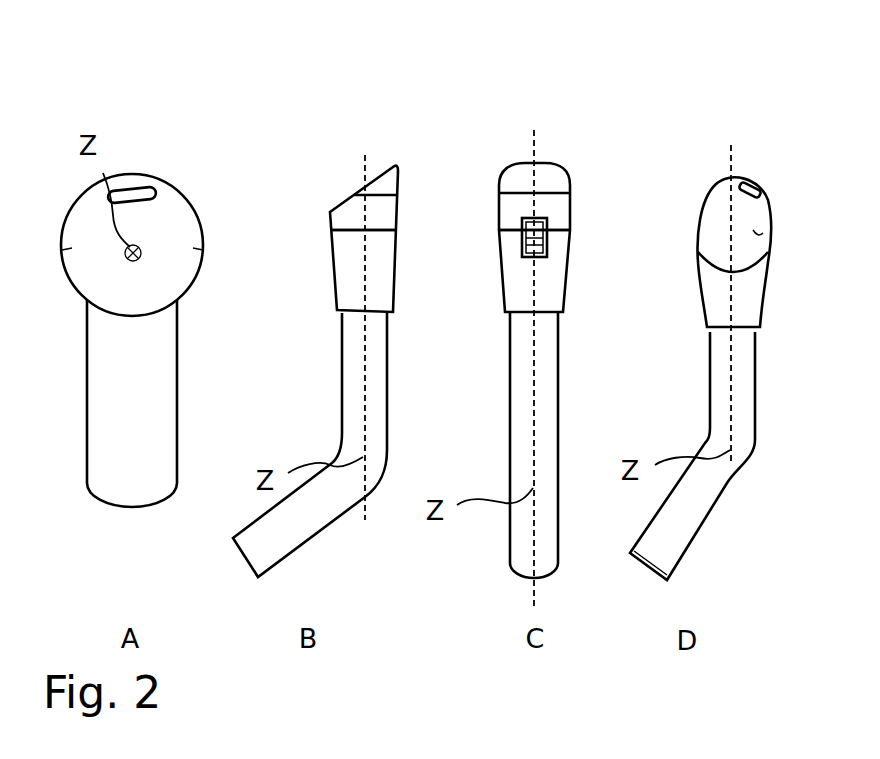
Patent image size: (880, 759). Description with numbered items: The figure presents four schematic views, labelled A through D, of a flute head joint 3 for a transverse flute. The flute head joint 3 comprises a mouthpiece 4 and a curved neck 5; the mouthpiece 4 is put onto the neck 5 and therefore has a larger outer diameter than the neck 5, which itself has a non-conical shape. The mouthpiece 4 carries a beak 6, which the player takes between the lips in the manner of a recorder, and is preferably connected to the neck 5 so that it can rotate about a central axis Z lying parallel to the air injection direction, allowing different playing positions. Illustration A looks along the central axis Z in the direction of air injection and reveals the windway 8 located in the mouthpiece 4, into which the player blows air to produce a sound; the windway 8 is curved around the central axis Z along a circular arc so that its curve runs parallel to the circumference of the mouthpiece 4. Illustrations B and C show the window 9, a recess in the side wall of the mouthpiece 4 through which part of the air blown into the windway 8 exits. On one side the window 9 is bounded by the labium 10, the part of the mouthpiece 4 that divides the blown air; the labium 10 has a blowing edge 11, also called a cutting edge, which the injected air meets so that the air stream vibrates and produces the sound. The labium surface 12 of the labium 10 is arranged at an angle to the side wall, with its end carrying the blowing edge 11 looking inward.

The flute head joint 3 is at (200, 135).
The mouthpiece 4 is at (225, 292).
The neck 5 is at (195, 420).
The beak 6 is at (393, 172).
The windway 8 is at (133, 186).
The window 9 is at (414, 226).
The labium 10 is at (565, 250).
The blowing edge 11 is at (538, 245).
The labium surface 12 is at (545, 238).